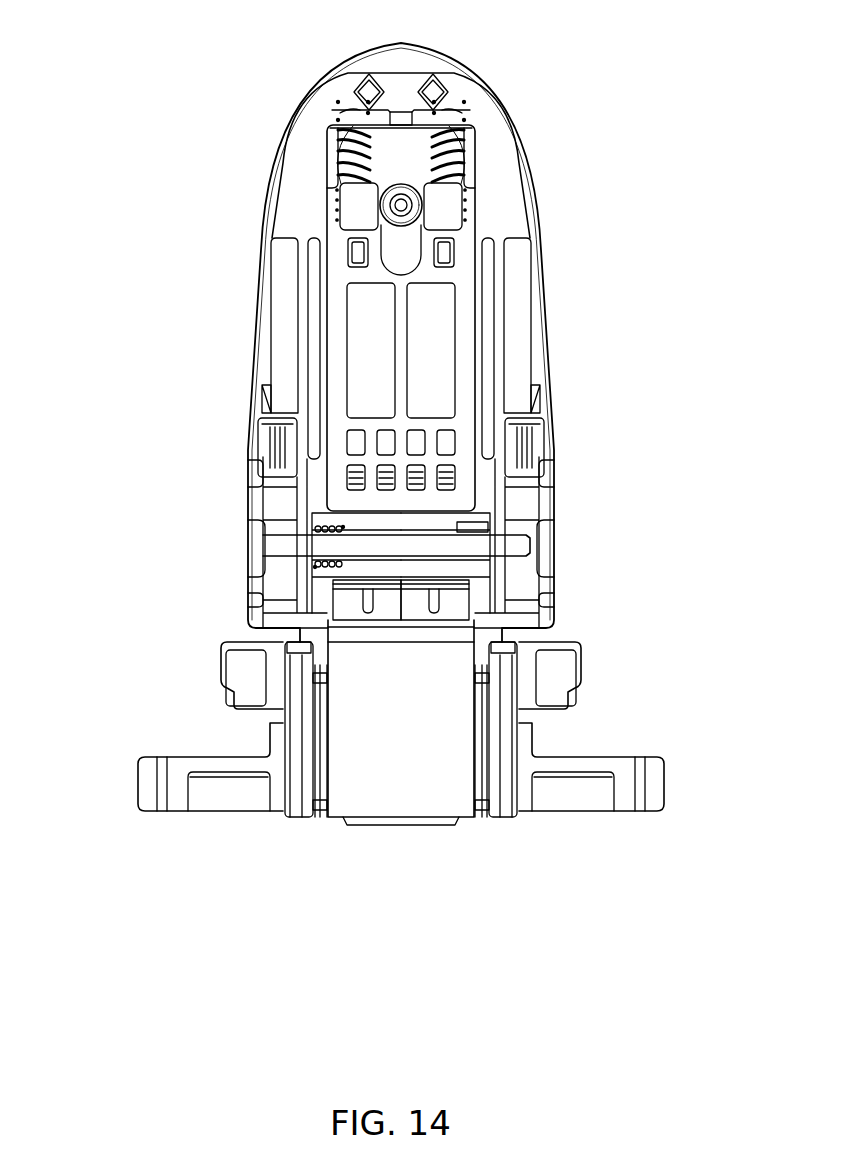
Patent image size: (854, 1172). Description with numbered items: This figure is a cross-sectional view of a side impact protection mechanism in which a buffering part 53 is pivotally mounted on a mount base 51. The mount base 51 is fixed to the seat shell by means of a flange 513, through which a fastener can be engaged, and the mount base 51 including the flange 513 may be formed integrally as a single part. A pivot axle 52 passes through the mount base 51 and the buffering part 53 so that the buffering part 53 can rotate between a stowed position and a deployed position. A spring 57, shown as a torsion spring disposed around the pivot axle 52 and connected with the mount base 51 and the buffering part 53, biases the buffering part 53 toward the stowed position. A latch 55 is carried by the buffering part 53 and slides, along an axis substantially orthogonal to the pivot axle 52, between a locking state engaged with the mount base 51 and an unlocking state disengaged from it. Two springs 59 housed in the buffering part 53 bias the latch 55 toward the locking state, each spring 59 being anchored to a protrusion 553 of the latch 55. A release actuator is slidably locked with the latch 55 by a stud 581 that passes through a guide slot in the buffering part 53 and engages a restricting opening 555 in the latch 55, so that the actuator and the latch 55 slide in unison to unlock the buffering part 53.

The mount base 51 is at (420, 797).
The flange 513 is at (146, 798).
The pivot axle 52 is at (318, 551).
The buffering part 53 is at (527, 183).
The latch 55 is at (338, 283).
The protrusion 553 is at (446, 204).
The restricting opening 555 is at (357, 233).
The spring 57 is at (313, 570).
The stud 581 is at (357, 253).
The spring 59 is at (357, 148).